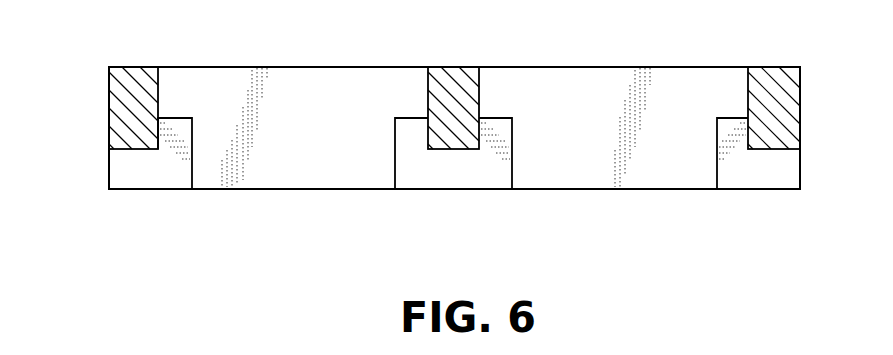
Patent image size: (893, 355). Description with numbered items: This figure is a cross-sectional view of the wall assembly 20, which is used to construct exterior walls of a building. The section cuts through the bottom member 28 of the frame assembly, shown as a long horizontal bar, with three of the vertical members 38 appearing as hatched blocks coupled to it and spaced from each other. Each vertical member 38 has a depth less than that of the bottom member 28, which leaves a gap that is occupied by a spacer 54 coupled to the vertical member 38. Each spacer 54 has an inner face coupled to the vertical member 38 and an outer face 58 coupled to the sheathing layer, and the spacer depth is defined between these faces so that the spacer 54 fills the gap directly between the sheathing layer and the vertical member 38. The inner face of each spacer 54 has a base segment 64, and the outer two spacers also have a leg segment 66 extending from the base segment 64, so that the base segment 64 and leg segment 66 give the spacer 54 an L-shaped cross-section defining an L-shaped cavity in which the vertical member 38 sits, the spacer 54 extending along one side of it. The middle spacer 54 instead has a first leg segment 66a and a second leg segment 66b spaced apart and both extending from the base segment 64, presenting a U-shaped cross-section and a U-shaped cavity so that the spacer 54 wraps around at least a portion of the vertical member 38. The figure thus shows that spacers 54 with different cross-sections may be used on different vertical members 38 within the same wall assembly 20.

The wall assembly 20 is at (800, 46).
The bottom member 28 is at (228, 80).
The vertical member 38 is at (122, 97).
The spacer 54 is at (133, 190).
The outer face 58 is at (184, 193).
The base segment 64 is at (157, 170).
The leg segment 66 is at (173, 117).
The first leg segment 66a is at (418, 117).
The second leg segment 66b is at (492, 117).